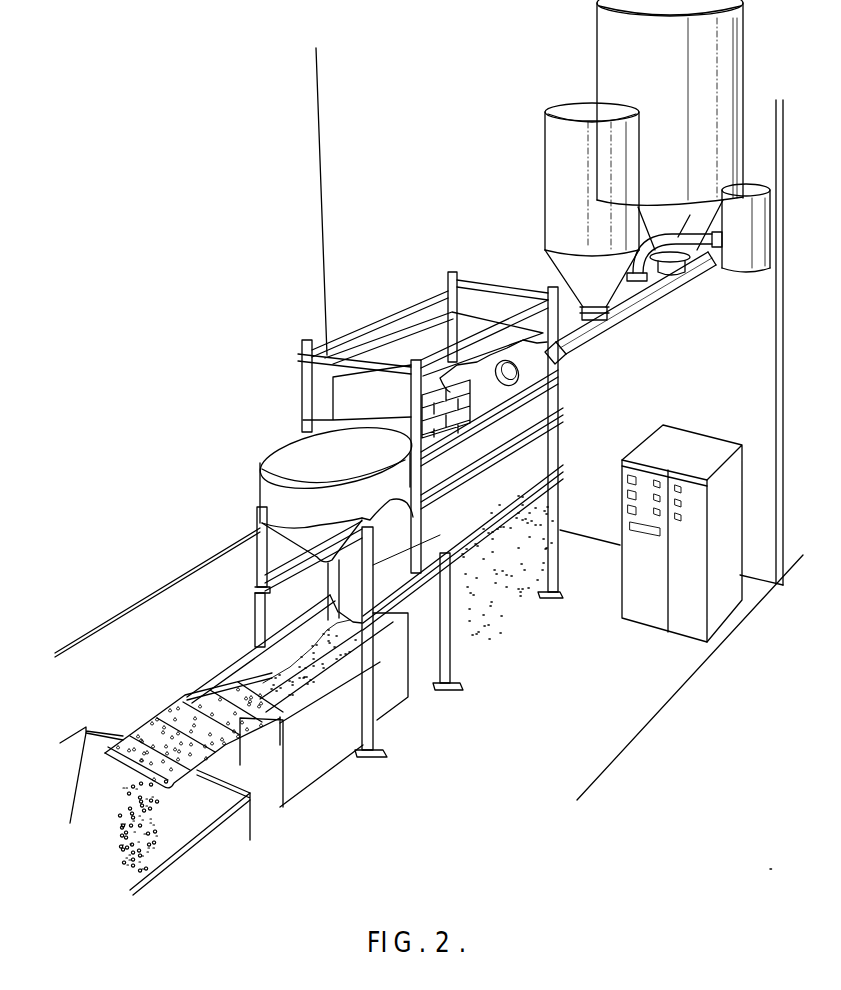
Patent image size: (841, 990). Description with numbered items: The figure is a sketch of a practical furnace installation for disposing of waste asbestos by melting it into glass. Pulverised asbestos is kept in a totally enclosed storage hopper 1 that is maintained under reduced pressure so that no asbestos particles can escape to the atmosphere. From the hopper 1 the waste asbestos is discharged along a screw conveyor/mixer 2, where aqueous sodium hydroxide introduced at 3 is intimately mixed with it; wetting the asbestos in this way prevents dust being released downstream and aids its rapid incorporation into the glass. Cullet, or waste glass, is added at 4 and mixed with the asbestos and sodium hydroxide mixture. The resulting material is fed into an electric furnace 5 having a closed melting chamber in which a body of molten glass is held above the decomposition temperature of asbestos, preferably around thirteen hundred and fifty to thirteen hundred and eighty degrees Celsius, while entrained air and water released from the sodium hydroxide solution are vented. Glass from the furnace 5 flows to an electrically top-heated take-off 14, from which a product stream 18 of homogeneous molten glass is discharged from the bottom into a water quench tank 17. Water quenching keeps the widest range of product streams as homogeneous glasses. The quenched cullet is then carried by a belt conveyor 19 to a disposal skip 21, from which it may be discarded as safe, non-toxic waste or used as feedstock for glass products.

The storage hopper 1 is at (717, 90).
The screw conveyor/mixer 2 is at (633, 310).
The sodium hydroxide introduction point 3 is at (732, 260).
The cullet addition point 4 is at (557, 203).
The electric furnace 5 is at (405, 337).
The take-off 14 is at (287, 473).
The water quench tank 17 is at (390, 688).
The product stream 18 is at (313, 605).
The belt conveyor 19 is at (183, 697).
The disposal skip 21 is at (182, 813).